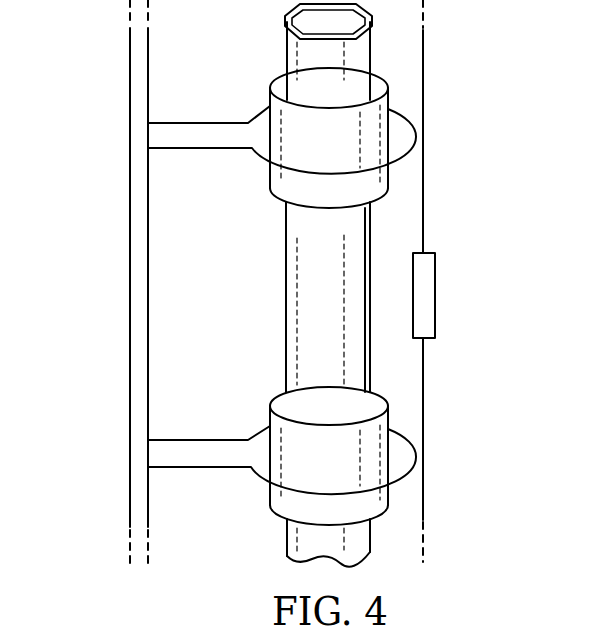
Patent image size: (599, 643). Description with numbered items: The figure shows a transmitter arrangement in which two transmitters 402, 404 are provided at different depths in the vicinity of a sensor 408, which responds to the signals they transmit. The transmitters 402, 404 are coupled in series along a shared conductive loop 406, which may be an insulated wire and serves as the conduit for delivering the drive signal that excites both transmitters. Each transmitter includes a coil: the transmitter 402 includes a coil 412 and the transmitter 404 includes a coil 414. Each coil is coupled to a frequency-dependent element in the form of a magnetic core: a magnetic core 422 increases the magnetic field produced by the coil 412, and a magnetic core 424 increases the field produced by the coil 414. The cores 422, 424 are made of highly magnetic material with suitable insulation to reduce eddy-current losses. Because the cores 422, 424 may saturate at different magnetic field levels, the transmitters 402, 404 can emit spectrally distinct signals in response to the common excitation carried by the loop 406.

The transmitter 402 is at (443, 62).
The transmitter 404 is at (443, 379).
The shared conductive loop 406 is at (128, 258).
The sensor 408 is at (437, 295).
The coil 412 is at (255, 158).
The coil 414 is at (256, 474).
The magnetic core 422 is at (268, 100).
The magnetic core 424 is at (268, 414).